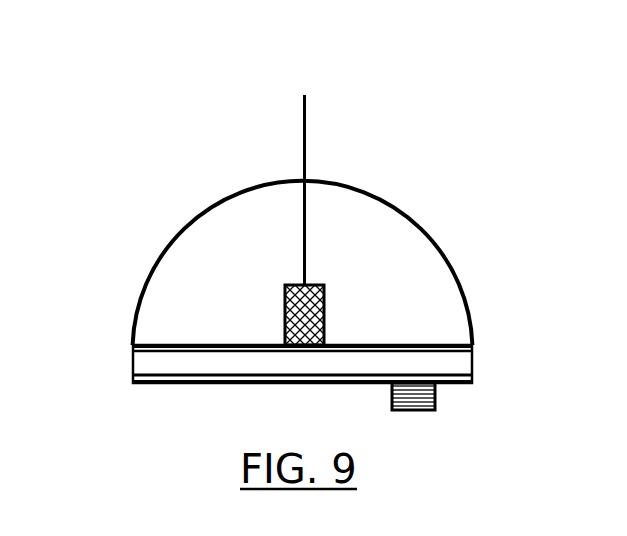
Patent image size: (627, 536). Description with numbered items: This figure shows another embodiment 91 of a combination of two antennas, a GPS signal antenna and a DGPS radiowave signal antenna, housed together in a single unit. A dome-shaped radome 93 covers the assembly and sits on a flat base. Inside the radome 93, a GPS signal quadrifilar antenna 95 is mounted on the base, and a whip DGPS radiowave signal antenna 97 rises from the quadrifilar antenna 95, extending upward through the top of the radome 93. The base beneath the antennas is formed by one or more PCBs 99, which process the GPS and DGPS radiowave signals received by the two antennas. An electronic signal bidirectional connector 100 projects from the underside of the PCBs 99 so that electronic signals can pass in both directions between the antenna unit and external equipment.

The combination antenna embodiment 91 is at (437, 135).
The radome 93 is at (437, 237).
The GPS signal quadrifilar antenna 95 is at (323, 312).
The whip DGPS radiowave signal antenna 97 is at (305, 150).
The PCBs 99 is at (132, 345).
The electronic signal bidirectional connector 100 is at (435, 397).